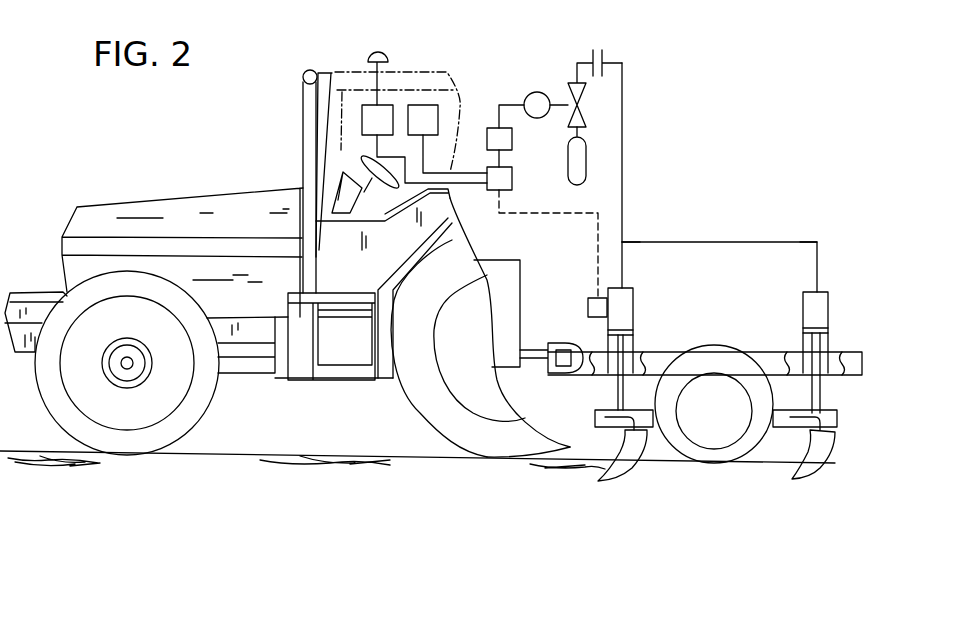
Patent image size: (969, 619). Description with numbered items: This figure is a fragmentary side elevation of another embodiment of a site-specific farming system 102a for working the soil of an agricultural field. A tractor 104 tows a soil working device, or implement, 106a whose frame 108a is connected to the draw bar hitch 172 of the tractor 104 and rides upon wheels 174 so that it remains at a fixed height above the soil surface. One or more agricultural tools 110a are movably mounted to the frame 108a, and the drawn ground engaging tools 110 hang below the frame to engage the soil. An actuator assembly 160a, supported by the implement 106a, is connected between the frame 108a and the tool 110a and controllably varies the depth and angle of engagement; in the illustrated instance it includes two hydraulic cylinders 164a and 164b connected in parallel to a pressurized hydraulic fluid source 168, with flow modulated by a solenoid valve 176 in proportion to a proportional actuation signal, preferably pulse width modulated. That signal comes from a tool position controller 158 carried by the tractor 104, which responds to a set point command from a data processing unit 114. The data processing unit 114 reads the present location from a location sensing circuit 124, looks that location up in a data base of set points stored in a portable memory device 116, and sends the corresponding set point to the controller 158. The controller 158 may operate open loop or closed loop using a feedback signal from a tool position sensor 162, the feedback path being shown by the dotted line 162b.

The tractor 104 is at (147, 200).
The location sensing circuit 124 is at (368, 105).
The portable memory device 116 is at (422, 105).
The tool position controller 158 is at (493, 128).
The data processing unit 114 is at (513, 182).
The dotted line 162b is at (575, 215).
The tool position sensor 162 is at (588, 298).
The solenoid valve 176 is at (586, 105).
The pressurized hydraulic fluid source 168 is at (586, 152).
The system 102a is at (736, 104).
The soil working device 106a is at (771, 221).
The actuator assembly 160a is at (811, 222).
The hydraulic cylinder 164b is at (622, 290).
The hydraulic cylinder 164a is at (818, 292).
The frame 108a is at (755, 352).
The draw bar hitch 172 is at (530, 350).
The wheels 174 is at (678, 453).
The ground engaging tools 110 is at (784, 494).
The agricultural tool 110a is at (623, 481).